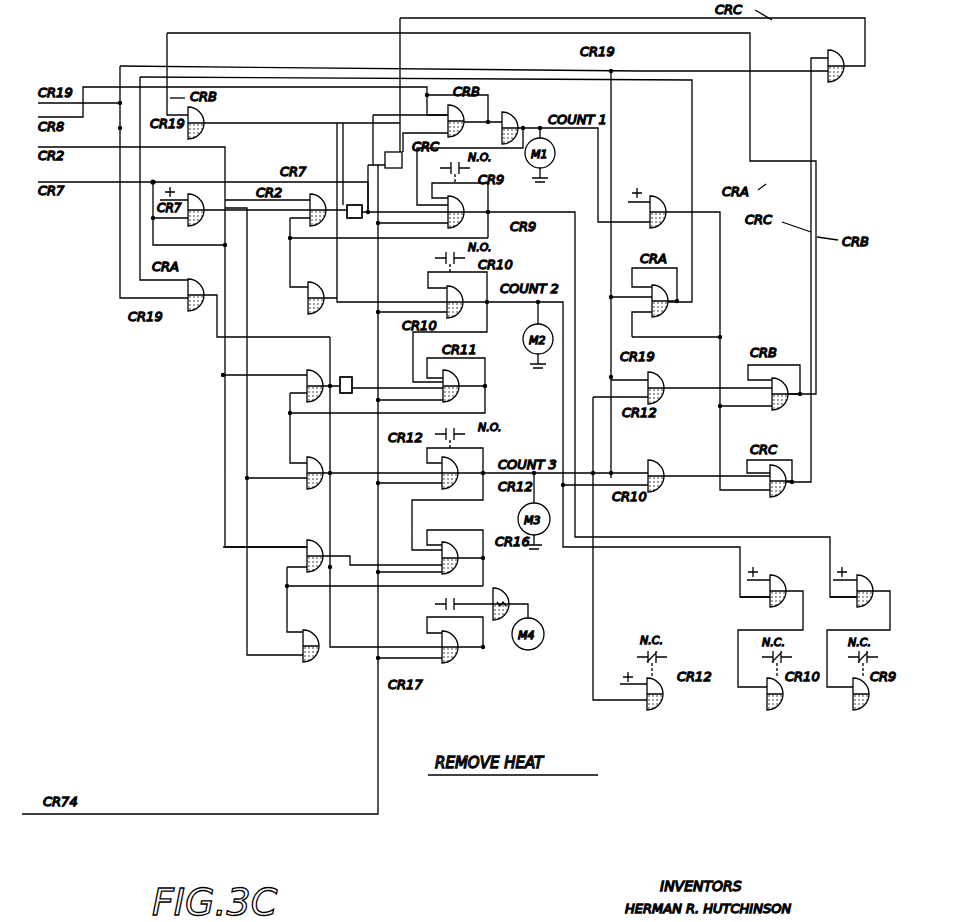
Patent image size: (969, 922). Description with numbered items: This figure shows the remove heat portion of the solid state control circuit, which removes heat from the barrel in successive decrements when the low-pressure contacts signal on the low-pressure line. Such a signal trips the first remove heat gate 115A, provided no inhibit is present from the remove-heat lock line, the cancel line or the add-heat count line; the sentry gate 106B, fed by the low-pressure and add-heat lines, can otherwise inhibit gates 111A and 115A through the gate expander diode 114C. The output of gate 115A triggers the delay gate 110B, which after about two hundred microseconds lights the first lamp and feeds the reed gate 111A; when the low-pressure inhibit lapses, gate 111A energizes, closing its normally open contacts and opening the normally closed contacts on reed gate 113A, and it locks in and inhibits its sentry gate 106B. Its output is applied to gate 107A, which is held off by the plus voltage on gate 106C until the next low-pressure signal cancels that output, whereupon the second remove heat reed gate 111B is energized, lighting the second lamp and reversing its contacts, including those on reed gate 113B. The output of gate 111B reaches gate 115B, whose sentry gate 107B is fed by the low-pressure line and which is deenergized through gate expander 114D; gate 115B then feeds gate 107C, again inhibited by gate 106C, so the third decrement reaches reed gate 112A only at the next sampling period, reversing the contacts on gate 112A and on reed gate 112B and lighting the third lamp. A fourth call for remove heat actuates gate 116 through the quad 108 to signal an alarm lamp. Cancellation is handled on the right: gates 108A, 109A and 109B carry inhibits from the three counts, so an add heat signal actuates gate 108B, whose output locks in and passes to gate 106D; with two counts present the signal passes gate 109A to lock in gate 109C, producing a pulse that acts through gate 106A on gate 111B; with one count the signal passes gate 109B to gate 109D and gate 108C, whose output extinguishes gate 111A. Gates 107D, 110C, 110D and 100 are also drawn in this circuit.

The logic gate 100 is at (452, 574).
The gate 106A is at (205, 116).
The sentry gate 106B is at (310, 216).
The gate 106C is at (210, 230).
The gate 106D is at (200, 312).
The gate 107A is at (320, 280).
The sentry gate 107B is at (318, 369).
The gate 107C is at (318, 490).
The logic gate 107D is at (315, 540).
The quad 108 is at (313, 664).
The gate 108A is at (675, 182).
The gate 108B is at (664, 316).
The gate 108C is at (838, 82).
The gate 109A is at (658, 374).
The gate 109B is at (678, 457).
The gate 109C is at (782, 410).
The gate 109D is at (780, 497).
The delay gate 110B is at (512, 112).
The logic gate 110C is at (790, 568).
The logic gate 110D is at (878, 565).
The reed gate 111A is at (462, 203).
The reed gate 111B is at (447, 294).
The reed gate 112A is at (452, 489).
The reed gate 112B is at (657, 710).
The reed gate 113A is at (865, 710).
The reed gate 113B is at (779, 710).
The gate expander diode 114C is at (348, 218).
The gate expander 114D is at (355, 368).
The first remove heat gate 115A is at (460, 137).
The gate 115B is at (458, 394).
The gate 116 is at (454, 663).